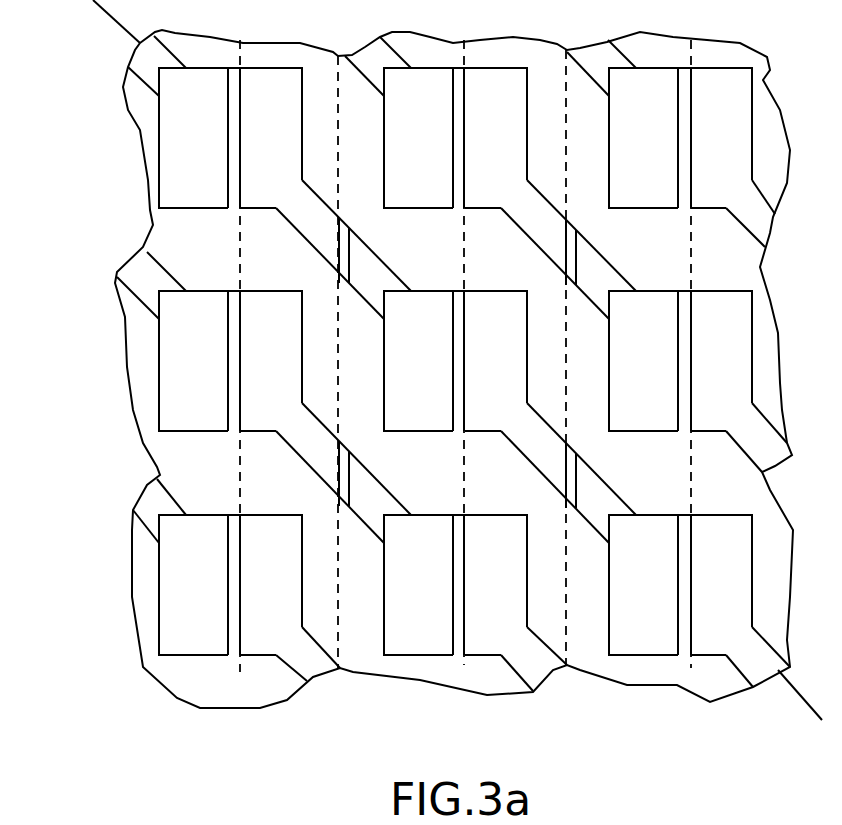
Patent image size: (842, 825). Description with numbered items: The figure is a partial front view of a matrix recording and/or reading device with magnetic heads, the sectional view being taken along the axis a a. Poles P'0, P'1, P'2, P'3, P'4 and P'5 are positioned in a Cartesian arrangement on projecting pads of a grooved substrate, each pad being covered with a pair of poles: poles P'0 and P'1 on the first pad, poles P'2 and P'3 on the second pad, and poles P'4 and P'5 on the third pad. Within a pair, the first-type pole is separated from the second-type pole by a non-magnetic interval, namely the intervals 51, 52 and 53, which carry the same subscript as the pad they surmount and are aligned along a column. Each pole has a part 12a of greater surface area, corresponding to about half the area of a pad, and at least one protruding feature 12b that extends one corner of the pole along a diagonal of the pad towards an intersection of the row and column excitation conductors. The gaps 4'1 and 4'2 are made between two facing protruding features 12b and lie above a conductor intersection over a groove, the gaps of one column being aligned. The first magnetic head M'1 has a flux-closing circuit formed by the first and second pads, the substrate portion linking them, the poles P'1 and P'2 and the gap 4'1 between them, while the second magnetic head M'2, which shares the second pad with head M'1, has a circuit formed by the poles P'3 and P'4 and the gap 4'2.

The pole P'0 is at (193, 361).
The pole P'1 is at (265, 361).
The first pole P'2 is at (418, 361).
The second pole P'3 is at (490, 361).
The pole P'4 is at (643, 361).
The pole P'5 is at (715, 361).
The first magnetic head M'1 is at (359, 362).
The second magnetic head M'2 is at (588, 357).
The non-magnetic interval 51 is at (185, 697).
The non-magnetic interval 52 is at (463, 211).
The non-magnetic interval 53 is at (692, 211).
The gap 4'1 is at (359, 403).
The gap 4'2 is at (585, 400).
The part with greater surface area 12a is at (408, 418).
The protruding feature 12b is at (381, 277).
The axis a— a is at (100, 16).